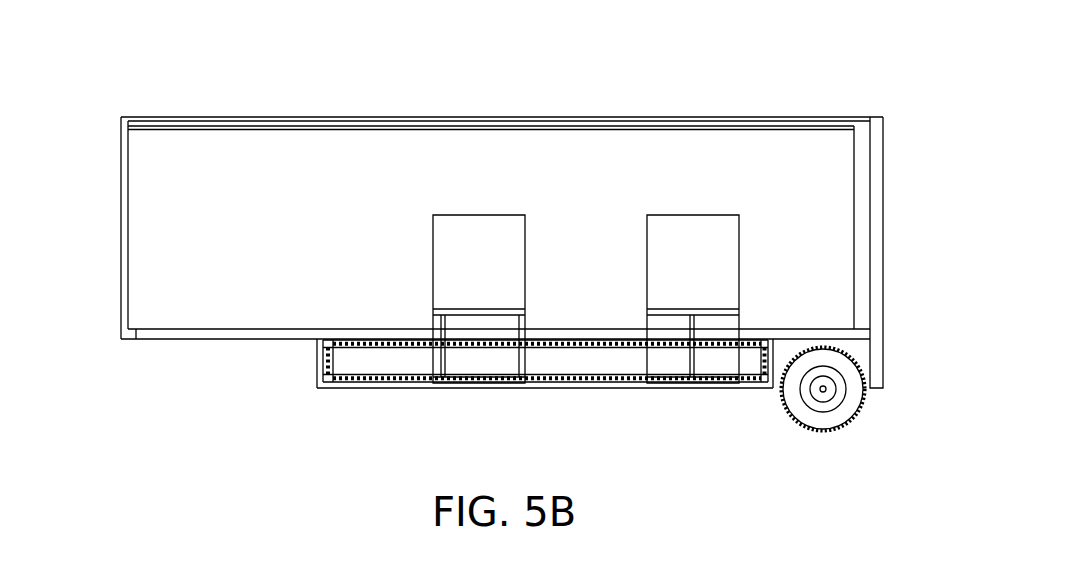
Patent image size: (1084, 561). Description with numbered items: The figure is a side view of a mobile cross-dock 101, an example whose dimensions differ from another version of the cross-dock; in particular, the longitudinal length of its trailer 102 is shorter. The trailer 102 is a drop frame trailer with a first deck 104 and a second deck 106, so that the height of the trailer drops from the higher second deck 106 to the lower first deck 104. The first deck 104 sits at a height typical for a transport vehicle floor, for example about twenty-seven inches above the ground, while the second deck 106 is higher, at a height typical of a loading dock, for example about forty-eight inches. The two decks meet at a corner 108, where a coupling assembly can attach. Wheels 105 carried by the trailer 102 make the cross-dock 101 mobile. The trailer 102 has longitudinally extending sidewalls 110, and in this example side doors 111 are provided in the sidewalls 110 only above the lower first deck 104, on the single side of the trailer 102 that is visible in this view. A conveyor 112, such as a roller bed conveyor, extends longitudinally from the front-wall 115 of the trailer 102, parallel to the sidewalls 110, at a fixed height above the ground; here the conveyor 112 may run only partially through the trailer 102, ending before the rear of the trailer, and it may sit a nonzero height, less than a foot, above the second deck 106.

The mobile cross-dock 101 is at (89, 240).
The trailer 102 is at (757, 117).
The first deck 104 is at (684, 411).
The wheels 105 is at (847, 409).
The second deck 106 is at (193, 362).
The corner 108 is at (333, 380).
The sidewalls 110 is at (496, 150).
The side doors 111 is at (681, 215).
The conveyor 112 is at (120, 73).
The front-wall 115 is at (918, 276).